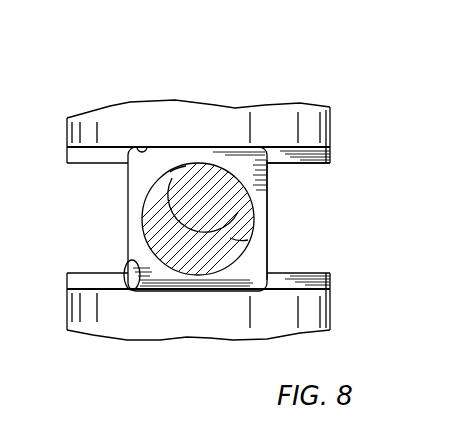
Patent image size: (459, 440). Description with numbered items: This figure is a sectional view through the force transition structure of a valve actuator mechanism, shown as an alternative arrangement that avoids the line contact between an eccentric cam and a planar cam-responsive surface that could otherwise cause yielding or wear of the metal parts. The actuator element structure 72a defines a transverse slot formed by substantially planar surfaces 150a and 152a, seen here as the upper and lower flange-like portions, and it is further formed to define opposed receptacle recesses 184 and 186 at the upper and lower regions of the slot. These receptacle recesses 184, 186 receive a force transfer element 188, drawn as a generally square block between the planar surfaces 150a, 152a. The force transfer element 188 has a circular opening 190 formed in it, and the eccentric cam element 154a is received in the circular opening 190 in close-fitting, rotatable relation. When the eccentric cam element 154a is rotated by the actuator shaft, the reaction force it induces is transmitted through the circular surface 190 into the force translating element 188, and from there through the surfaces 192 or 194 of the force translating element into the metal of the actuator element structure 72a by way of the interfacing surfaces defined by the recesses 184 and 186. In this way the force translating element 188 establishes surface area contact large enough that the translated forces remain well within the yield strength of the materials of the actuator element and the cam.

The actuator element structure 72a is at (238, 100).
The substantially planar surface 150a is at (308, 167).
The substantially planar surface 152a is at (251, 296).
The eccentric cam element 154a is at (249, 180).
The receptacle recess 184 is at (138, 147).
The receptacle recess 186 is at (120, 267).
The force transfer element 188 is at (268, 211).
The circular opening 190 is at (153, 219).
The surface of force translating element 192 is at (197, 82).
The surface of force translating element 194 is at (187, 356).